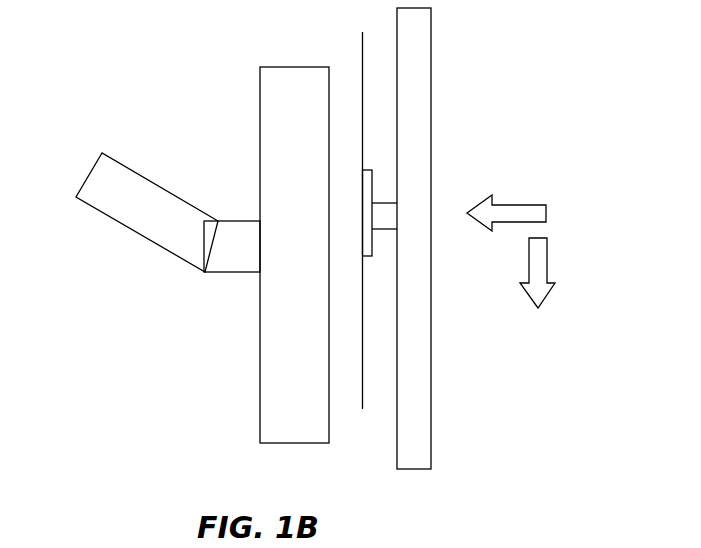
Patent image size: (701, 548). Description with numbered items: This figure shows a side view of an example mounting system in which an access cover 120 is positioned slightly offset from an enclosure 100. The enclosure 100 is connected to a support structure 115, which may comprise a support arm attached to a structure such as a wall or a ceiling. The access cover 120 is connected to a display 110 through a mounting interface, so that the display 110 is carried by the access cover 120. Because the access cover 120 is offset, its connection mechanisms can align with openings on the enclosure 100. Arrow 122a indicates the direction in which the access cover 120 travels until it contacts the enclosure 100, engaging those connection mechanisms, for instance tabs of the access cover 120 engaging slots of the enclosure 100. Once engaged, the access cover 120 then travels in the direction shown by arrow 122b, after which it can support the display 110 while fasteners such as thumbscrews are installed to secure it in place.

The enclosure 100 is at (260, 77).
The display 110 is at (431, 32).
The support structure 115 is at (230, 270).
The access cover 120 is at (362, 50).
The arrow 122a is at (532, 190).
The arrow 122b is at (547, 252).